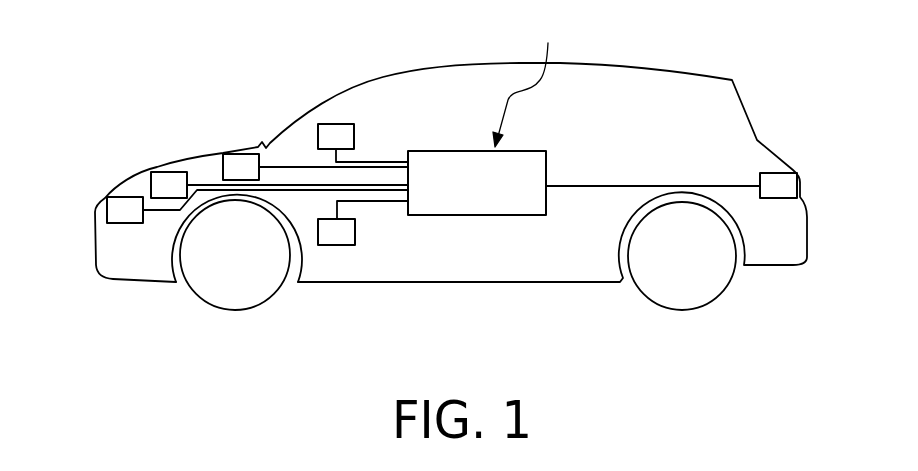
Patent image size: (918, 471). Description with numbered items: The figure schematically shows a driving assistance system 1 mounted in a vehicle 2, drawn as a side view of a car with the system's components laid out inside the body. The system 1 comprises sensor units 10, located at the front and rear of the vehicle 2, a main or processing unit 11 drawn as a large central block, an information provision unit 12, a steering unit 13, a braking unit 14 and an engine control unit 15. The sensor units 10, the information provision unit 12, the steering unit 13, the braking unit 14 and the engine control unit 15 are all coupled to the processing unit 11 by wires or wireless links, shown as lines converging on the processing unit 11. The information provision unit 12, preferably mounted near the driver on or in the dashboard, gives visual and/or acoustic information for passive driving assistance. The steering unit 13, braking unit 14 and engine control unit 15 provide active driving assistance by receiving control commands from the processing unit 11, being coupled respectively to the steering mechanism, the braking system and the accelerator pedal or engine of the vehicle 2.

The system 1 is at (524, 80).
The vehicle 2 is at (800, 89).
The sensor units 10 is at (108, 203).
The processing unit 11 is at (465, 215).
The information provision unit 12 is at (318, 128).
The steering unit 13 is at (223, 157).
The braking unit 14 is at (337, 245).
The engine control unit 15 is at (151, 185).